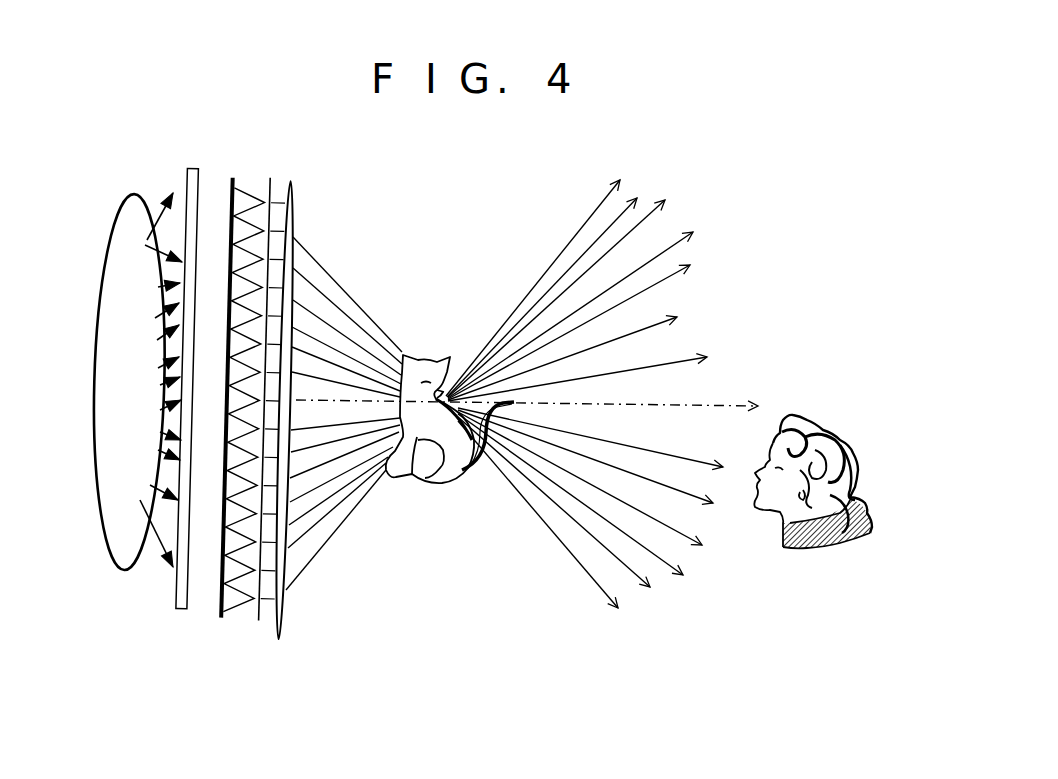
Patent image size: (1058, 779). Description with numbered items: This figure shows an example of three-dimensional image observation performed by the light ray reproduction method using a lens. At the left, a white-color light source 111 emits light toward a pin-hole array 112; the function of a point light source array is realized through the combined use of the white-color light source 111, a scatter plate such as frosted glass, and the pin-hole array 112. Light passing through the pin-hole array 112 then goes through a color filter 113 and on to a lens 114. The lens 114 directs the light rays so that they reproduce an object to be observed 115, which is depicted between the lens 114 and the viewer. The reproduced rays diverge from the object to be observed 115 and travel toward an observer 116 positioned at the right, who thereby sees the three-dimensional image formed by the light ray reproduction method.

The white-color light source 111 is at (130, 574).
The pin-hole array 112 is at (222, 618).
The color filter 113 is at (267, 186).
The lens 114 is at (287, 617).
The object to be observed 115 is at (452, 490).
The observer 116 is at (813, 557).